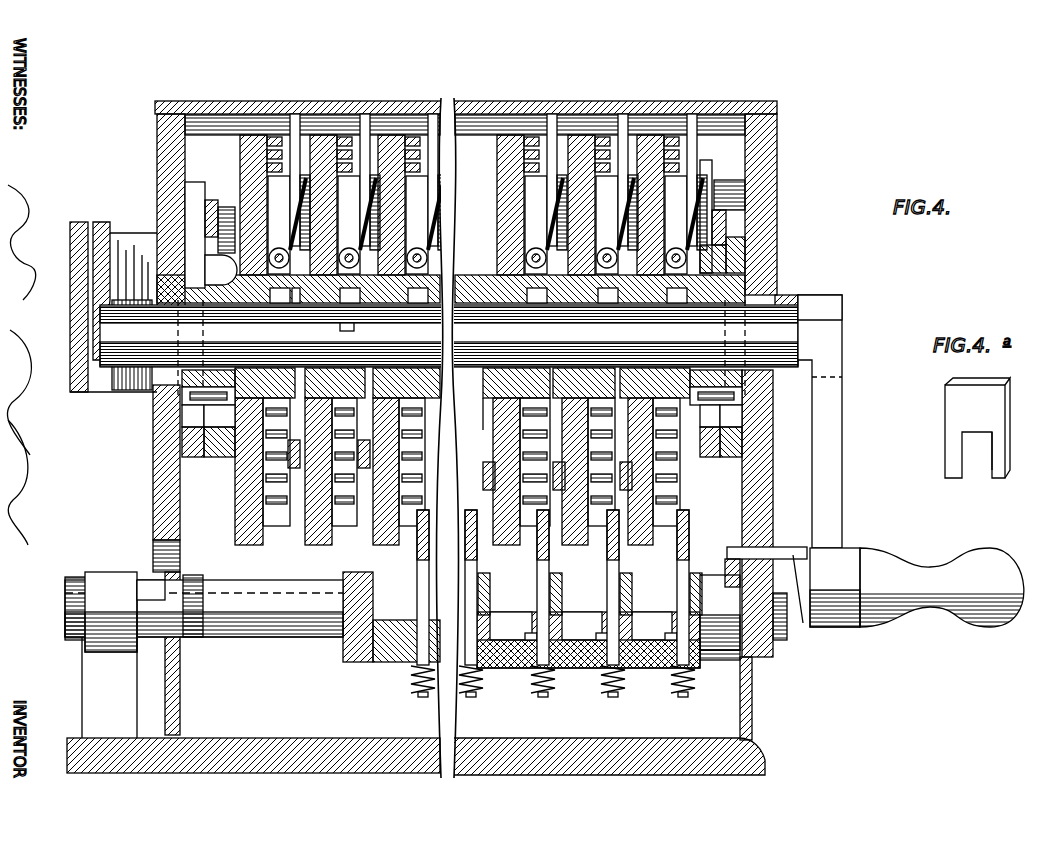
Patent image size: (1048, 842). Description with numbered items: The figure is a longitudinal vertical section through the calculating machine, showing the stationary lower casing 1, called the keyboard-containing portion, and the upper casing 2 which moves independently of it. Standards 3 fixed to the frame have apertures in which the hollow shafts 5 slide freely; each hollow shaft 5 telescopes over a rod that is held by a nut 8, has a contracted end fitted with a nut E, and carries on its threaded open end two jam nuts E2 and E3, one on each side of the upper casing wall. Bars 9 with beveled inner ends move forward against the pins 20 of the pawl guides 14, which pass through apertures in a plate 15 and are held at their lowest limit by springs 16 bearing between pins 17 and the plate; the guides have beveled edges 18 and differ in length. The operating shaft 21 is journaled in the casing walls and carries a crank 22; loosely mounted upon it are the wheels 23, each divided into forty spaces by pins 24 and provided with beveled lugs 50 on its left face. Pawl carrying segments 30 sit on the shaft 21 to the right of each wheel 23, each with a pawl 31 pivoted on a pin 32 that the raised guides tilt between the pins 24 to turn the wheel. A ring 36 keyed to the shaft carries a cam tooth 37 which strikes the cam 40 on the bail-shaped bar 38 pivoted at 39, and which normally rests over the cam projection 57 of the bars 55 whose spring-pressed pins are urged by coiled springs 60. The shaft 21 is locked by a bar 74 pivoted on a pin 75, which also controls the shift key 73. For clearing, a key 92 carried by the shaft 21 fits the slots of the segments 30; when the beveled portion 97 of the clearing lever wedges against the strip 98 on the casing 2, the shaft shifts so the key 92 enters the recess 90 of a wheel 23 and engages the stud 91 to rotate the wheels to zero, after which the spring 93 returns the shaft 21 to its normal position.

In FIG. 4, the lower casing 1 is at (765, 760).
In FIG. 4, the upper casing 2 is at (755, 114).
In FIG. 4, the standard 3 is at (752, 705).
In FIG. 4, the hollow shaft 5 is at (278, 637).
In FIG. 4, the nut 8 is at (72, 638).
In FIG. 4, the bar 9 is at (505, 668).
In FIG. 4, the pawl guide 14 is at (402, 662).
In FIG. 4, the plate 15 is at (670, 682).
In FIG. 4, the spring 16 is at (595, 680).
In FIG. 4, the pin 17 is at (543, 692).
In FIG. 4, the beveled edge 18 is at (470, 512).
In FIG. 4, the pin 20 is at (598, 612).
In FIG. 4, the operating shaft 21 is at (449, 347).
In FIG. 4, the crank 22 is at (843, 368).
In FIG. 4, the wheel 23 is at (420, 137).
In FIG. 4, the pin 24 is at (395, 140).
In FIG. 4, the pawl carrying segment 30 is at (745, 280).
In FIG. 4, the pawl 31 is at (706, 200).
In FIG. 4, the pin 32 is at (695, 225).
In FIG. 4, the ring 36 is at (182, 378).
In FIG. 4, the cam tooth 37 is at (182, 395).
In FIG. 4, the bail-shaped bar 38 is at (745, 255).
In FIG. 4, the pivot 39 is at (727, 225).
In FIG. 4, the cam 40 is at (205, 270).
In FIG. 4, the beveled lug 50 is at (298, 462).
In FIG. 4, the bar 55 is at (182, 440).
In FIG. 4, the cam projection 57 is at (182, 415).
In FIG. 4, the coiled spring 60 is at (745, 205).
In FIG. 4, the shift key 73 is at (805, 602).
In FIG. 4, the bar 74 is at (770, 550).
In FIG. 4, the pin 75 is at (730, 558).
In FIG. 4, the recess 90 is at (348, 331).
In FIG. 4, the stud 91 is at (296, 302).
In FIG. 4, the key 92 is at (278, 302).
In FIG. 4a, the key 92 is at (948, 420).
In FIG. 4, the spring 93 is at (115, 350).
In FIG. 4, the beveled portion 97 is at (78, 258).
In FIG. 4, the strip 98 is at (93, 312).
In FIG. 4, the nut E is at (780, 595).
In FIG. 4, the jam nut E2 is at (140, 580).
In FIG. 4, the jam nut E3 is at (213, 575).